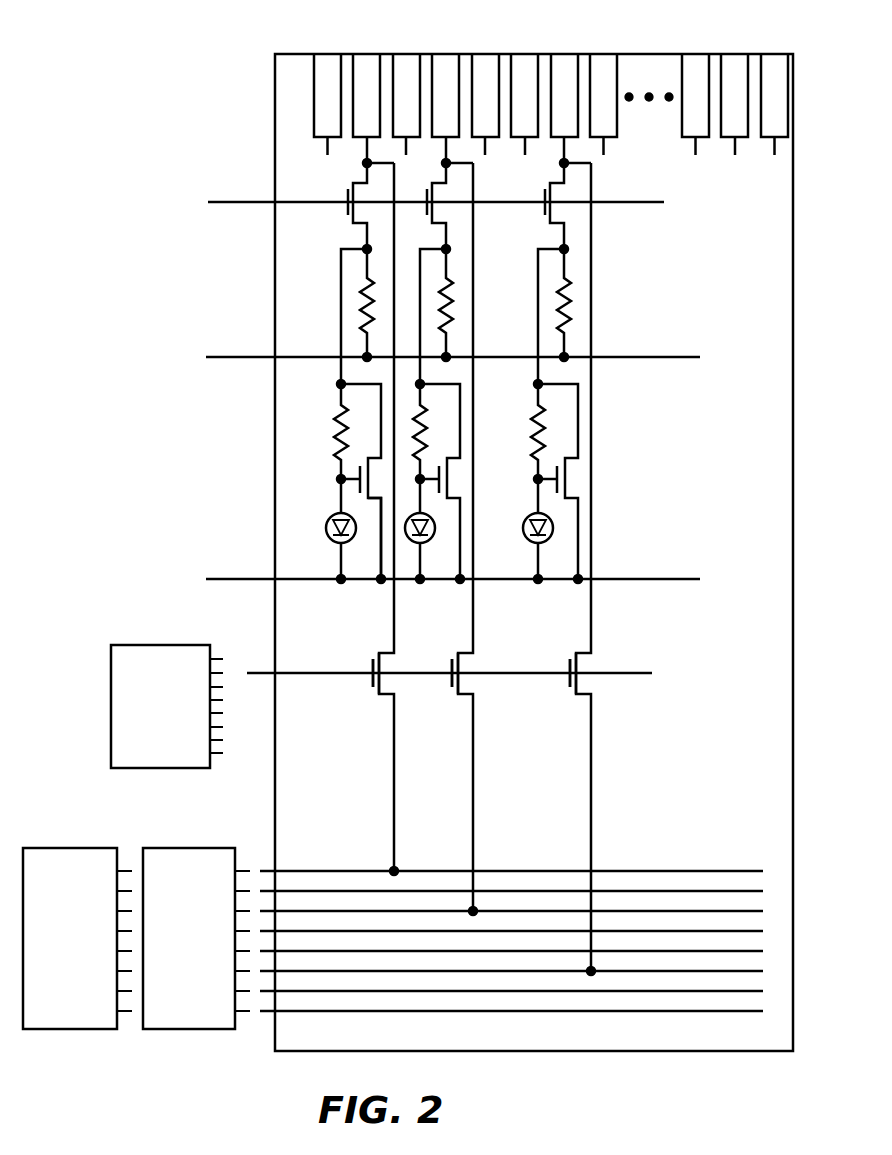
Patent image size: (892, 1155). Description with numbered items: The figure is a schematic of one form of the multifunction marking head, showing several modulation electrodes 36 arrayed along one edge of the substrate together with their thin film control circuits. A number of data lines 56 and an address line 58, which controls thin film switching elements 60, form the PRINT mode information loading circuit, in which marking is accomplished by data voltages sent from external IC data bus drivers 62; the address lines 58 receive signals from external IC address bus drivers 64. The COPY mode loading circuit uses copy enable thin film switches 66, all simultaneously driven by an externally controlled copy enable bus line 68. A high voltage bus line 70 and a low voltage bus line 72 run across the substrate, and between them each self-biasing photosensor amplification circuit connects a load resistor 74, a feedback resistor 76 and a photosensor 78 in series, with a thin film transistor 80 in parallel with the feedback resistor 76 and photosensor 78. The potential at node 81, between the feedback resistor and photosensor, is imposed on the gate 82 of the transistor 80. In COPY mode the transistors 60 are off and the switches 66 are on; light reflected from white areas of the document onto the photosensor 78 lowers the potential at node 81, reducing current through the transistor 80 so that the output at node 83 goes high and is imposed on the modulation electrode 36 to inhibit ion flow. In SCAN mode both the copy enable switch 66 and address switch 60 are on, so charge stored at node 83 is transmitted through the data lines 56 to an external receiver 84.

The modulation electrodes 36 is at (270, 95).
The node 83 is at (363, 164).
The copy enable bus line 68 is at (230, 200).
The copy enable thin film switches 66 is at (347, 210).
The load resistor 74 is at (358, 300).
The high voltage (V+) bus line 70 is at (240, 362).
The feedback resistor 76 is at (337, 414).
The node 81 is at (338, 478).
The gate 82 is at (357, 483).
The photosensor 78 is at (328, 540).
The thin film transistor 80 is at (372, 505).
The low voltage (V−) bus line 72 is at (238, 584).
The external IC address bus drivers 64 is at (111, 702).
The address lines 58 is at (305, 677).
The thin film switching elements 60 is at (372, 680).
The external receiver 84 is at (78, 847).
The external IC data bus drivers 62 is at (193, 847).
The data lines 56 is at (318, 951).